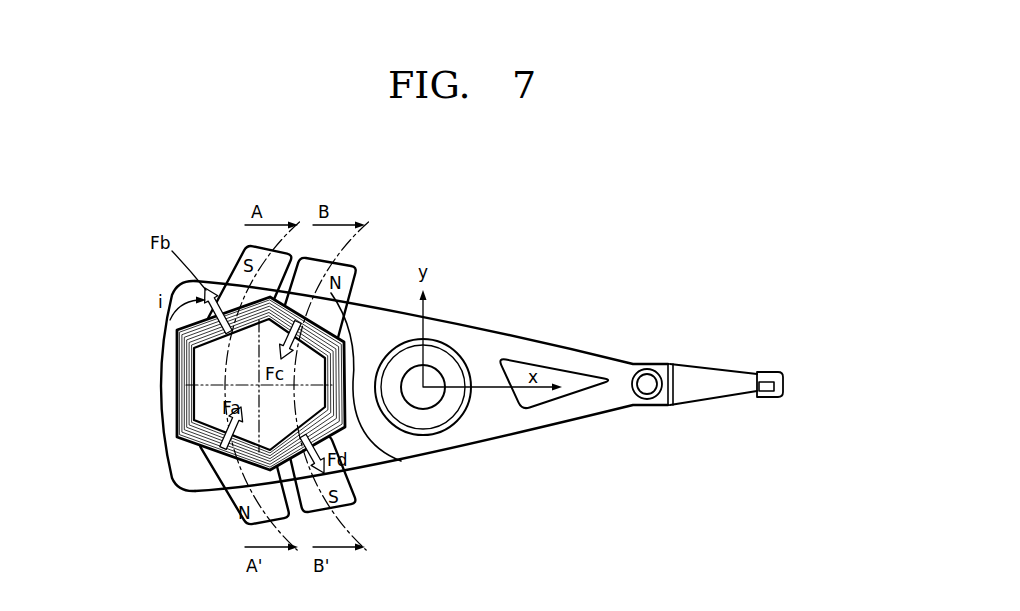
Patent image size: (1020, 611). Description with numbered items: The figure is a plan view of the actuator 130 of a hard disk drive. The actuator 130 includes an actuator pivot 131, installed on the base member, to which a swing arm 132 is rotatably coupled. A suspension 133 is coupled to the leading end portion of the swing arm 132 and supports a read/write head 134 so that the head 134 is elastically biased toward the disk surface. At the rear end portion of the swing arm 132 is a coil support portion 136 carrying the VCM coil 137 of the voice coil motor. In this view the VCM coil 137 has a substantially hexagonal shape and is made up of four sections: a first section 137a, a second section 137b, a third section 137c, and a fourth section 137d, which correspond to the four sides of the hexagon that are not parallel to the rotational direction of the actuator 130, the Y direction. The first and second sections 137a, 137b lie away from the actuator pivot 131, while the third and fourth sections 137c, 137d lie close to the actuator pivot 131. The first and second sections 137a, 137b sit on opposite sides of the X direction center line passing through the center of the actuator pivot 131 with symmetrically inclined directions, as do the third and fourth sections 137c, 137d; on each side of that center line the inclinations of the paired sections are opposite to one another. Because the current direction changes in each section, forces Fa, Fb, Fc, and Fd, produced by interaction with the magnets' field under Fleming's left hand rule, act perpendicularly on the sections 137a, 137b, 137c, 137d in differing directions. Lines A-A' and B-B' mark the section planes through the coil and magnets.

The actuator 130 is at (488, 300).
The actuator pivot 131 is at (451, 404).
The swing arm 132 is at (558, 414).
The suspension 133 is at (707, 394).
The read/write head 134 is at (770, 372).
The coil support portion 136 is at (180, 478).
The VCM coil 137 is at (180, 377).
The first section 137a is at (190, 440).
The second section 137b is at (228, 308).
The third section 137c is at (338, 302).
The fourth section 137d is at (365, 476).